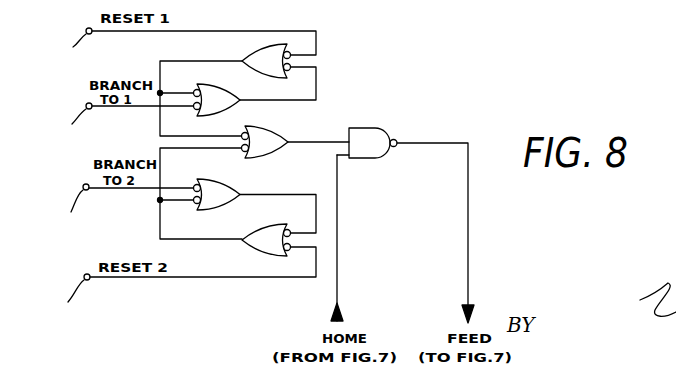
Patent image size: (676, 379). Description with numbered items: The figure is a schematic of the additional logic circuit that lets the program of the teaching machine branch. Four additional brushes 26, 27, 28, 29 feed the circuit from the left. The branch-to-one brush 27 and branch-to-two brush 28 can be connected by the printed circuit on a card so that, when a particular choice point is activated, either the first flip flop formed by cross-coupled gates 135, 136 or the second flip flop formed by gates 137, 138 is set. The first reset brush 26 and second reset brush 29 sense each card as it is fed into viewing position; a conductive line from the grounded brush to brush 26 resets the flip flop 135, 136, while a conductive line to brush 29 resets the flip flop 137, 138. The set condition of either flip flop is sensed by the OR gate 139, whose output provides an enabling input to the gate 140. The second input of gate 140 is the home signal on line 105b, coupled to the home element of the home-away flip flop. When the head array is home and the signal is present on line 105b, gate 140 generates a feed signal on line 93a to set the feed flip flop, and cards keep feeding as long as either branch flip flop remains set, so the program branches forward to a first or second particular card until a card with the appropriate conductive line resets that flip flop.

The brush 26 is at (186, 51).
The brush 27 is at (125, 122).
The brush 28 is at (125, 210).
The brush 29 is at (186, 286).
The flip flop gate 135 is at (206, 98).
The flip flop gate 136 is at (268, 54).
The flip flop gate 137 is at (220, 198).
The flip flop gate 138 is at (278, 209).
The OR gate 139 is at (262, 138).
The gate 140 is at (362, 142).
The line 105b is at (338, 292).
The line 93a is at (468, 252).